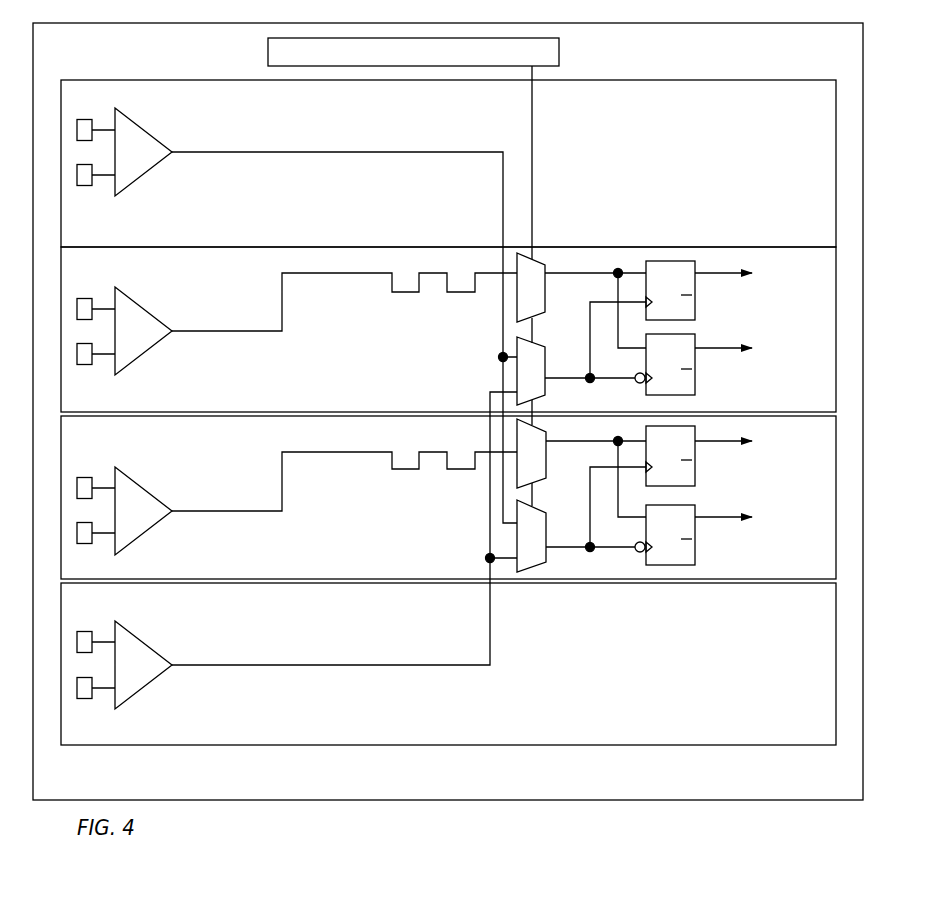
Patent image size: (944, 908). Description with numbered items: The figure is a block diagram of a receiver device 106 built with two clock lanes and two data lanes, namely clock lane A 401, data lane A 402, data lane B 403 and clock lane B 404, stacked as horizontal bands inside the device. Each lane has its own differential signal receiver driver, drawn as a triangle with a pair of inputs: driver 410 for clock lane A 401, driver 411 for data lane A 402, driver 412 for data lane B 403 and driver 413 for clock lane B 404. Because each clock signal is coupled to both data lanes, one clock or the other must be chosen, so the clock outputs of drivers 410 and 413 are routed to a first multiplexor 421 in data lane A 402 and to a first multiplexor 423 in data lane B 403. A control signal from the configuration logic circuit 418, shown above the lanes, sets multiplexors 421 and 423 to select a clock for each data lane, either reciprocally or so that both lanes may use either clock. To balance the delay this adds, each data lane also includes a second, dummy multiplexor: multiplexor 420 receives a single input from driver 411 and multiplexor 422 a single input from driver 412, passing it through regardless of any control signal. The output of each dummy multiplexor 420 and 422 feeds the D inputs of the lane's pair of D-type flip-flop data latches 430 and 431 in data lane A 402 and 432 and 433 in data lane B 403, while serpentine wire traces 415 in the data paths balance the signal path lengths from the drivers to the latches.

The receiver device 106 is at (820, 63).
The configuration logic circuit 418 is at (540, 61).
The clock lane A 401 is at (255, 105).
The data lane A 402 is at (227, 271).
The data lane B 403 is at (227, 442).
The clock lane B 404 is at (233, 603).
The differential signal receiver driver 410 is at (150, 162).
The differential signal receiver driver 411 is at (132, 343).
The differential signal receiver driver 412 is at (132, 520).
The differential signal receiver driver 413 is at (132, 673).
The serpentine wire traces 415 is at (403, 302).
The second multiplexor 420 is at (534, 258).
The first multiplexor 421 is at (549, 346).
The second multiplexor 422 is at (550, 457).
The first multiplexor 423 is at (547, 567).
The data latch 430 is at (700, 295).
The data latch 431 is at (700, 365).
The data latch 432 is at (700, 461).
The data latch 433 is at (700, 532).